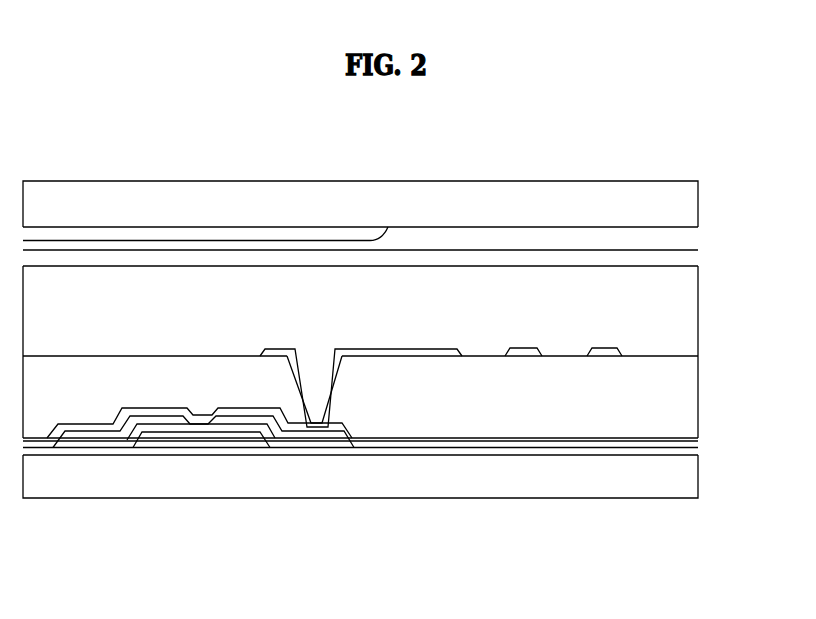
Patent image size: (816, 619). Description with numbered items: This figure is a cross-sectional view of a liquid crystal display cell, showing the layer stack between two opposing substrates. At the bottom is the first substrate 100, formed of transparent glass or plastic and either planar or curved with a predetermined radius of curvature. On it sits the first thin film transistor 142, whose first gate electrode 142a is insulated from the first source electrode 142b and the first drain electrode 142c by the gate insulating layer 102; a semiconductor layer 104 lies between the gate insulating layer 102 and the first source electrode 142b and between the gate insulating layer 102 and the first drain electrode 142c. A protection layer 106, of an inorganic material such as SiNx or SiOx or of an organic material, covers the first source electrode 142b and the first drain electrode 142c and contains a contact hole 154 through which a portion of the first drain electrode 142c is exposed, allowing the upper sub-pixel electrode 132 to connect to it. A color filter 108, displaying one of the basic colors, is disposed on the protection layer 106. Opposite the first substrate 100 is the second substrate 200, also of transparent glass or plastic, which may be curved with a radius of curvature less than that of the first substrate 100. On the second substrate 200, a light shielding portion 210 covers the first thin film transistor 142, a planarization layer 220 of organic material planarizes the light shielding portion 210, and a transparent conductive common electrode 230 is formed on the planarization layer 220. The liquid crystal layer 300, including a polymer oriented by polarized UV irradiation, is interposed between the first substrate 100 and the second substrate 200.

The first substrate 100 is at (686, 472).
The gate insulating layer 102 is at (380, 452).
The semiconductor layer 104 is at (122, 441).
The protection layer 106 is at (455, 443).
The color filter 108 is at (565, 398).
The upper sub-pixel electrode 132 is at (400, 352).
The first thin film transistor 142 is at (317, 545).
The first gate electrode 142a is at (205, 450).
The first source electrode 142b is at (73, 437).
The first drain electrode 142c is at (312, 440).
The contact hole 154 is at (317, 358).
The second substrate 200 is at (686, 203).
The light shielding portion 210 is at (338, 238).
The planarization layer 220 is at (454, 238).
The common electrode 230 is at (563, 258).
The liquid crystal layer 300 is at (686, 313).